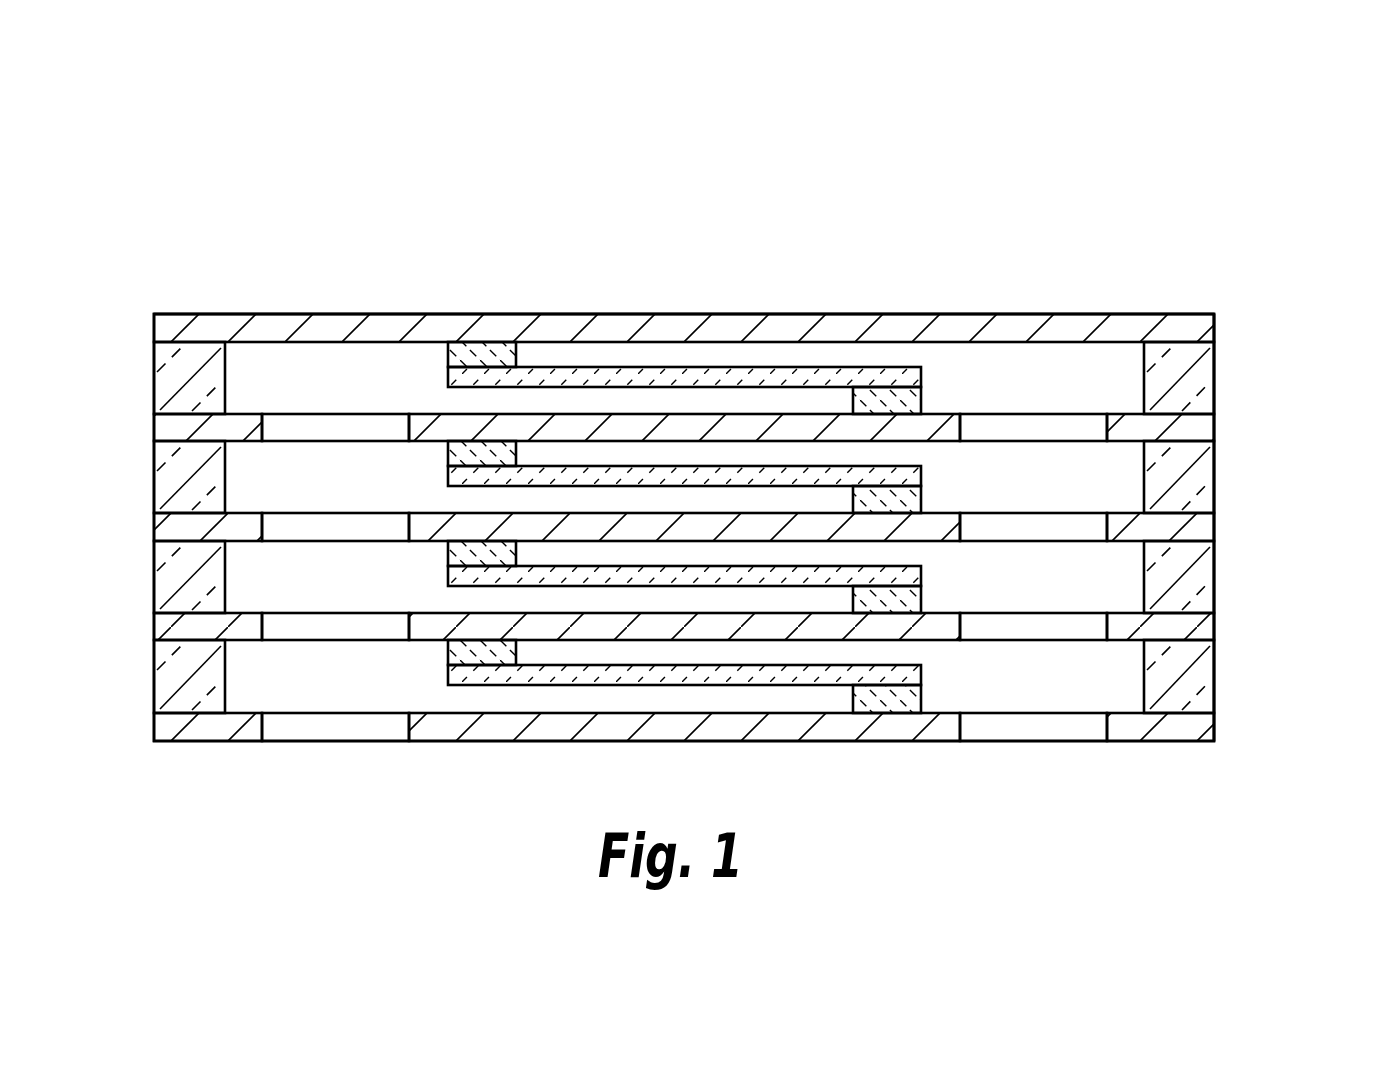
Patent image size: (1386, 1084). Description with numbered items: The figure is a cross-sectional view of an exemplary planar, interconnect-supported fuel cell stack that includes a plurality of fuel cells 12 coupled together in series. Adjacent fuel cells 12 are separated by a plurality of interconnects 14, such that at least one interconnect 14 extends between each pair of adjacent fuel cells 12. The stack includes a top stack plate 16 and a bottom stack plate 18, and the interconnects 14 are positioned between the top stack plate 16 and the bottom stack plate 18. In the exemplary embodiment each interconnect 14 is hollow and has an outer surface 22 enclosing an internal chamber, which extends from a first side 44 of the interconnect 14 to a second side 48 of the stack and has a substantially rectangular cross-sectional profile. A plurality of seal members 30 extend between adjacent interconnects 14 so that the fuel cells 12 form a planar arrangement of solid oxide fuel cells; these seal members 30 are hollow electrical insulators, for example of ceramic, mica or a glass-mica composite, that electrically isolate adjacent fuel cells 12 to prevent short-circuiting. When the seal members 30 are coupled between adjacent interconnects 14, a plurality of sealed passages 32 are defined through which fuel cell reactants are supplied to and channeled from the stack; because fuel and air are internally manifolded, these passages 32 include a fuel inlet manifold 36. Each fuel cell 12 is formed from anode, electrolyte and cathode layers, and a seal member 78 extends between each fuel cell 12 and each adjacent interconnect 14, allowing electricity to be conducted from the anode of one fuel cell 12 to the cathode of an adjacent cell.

The fuel cell 12 is at (921, 478).
The interconnect 14 is at (160, 322).
The top stack plate 16 is at (1215, 320).
The bottom stack plate 18 is at (166, 737).
The outer surface 22 is at (447, 411).
The seal member 30 is at (170, 460).
The sealed passage 32 is at (1097, 352).
The fuel inlet manifold 36 is at (283, 750).
The first side 44 is at (150, 289).
The second side 48 is at (1280, 216).
The seal member 78 is at (492, 449).